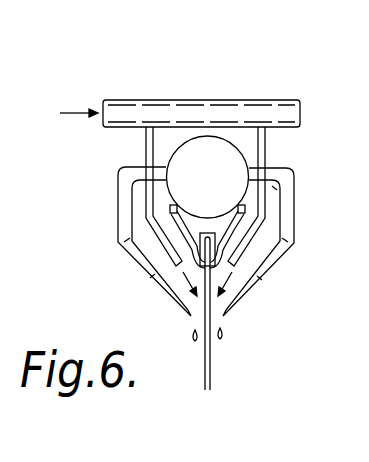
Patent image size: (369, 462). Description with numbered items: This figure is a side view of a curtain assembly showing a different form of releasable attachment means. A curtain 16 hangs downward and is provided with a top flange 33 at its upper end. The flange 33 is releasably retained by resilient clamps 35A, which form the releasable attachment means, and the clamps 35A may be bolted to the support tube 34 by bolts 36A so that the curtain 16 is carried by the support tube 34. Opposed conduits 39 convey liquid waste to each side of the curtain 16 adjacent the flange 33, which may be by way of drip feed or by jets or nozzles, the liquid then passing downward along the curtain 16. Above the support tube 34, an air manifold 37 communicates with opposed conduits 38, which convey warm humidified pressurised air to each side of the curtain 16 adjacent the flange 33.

The curtain 16 is at (212, 376).
The top flange 33 is at (222, 257).
The support tube 34 is at (208, 136).
The resilient clamps 35A is at (236, 233).
The bolts 36A is at (236, 213).
The air manifold 37 is at (172, 112).
The opposed conduits 38 is at (146, 149).
The opposed conduits 39 is at (157, 284).